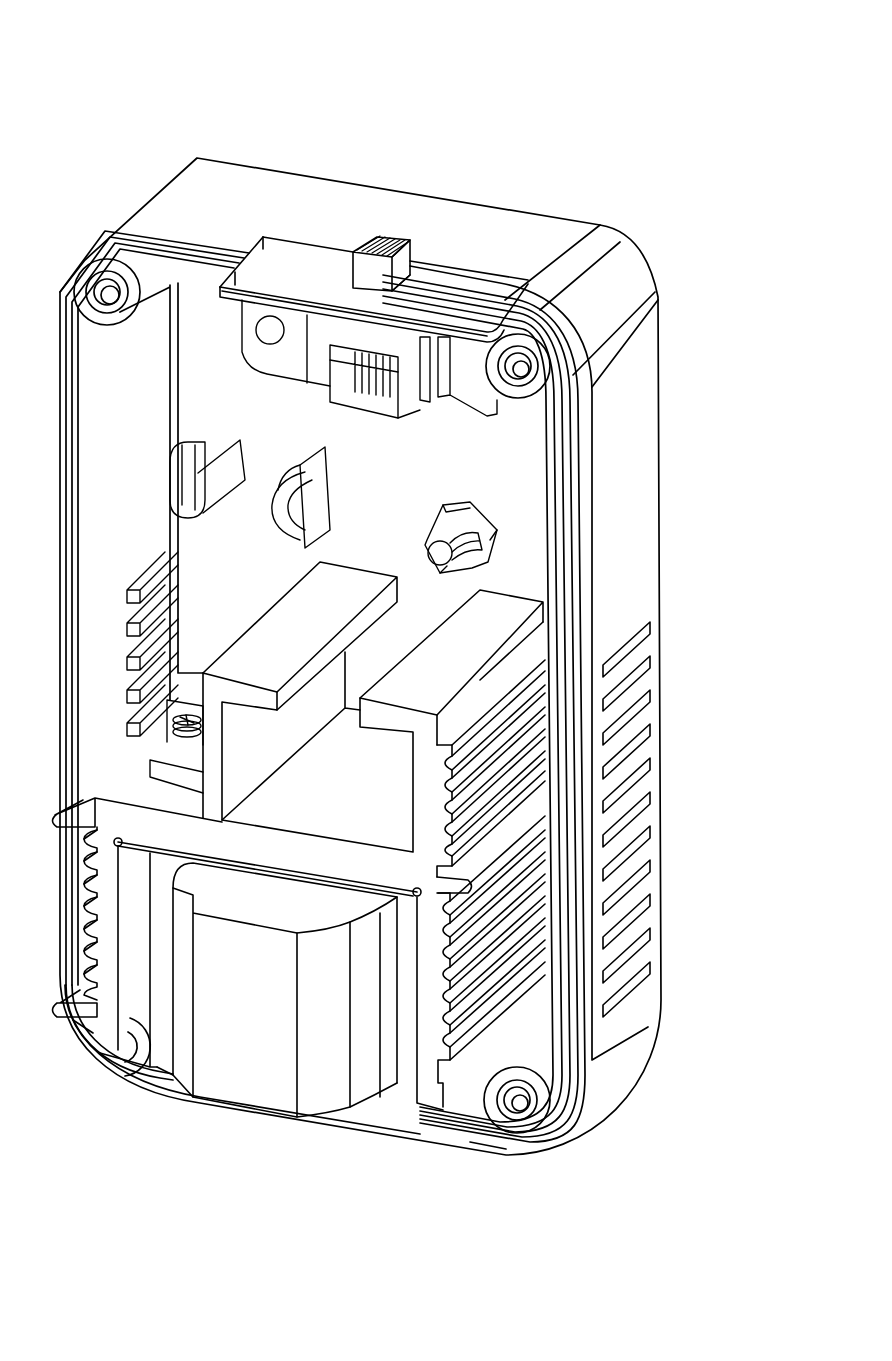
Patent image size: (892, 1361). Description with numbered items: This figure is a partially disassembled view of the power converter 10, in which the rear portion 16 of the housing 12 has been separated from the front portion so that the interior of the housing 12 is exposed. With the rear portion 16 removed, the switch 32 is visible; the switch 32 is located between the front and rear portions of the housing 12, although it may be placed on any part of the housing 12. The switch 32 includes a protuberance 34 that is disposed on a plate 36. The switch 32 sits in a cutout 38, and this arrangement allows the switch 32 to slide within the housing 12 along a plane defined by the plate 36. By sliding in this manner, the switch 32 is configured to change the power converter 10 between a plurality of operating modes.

The power converter 10 is at (513, 57).
The housing 12 is at (545, 208).
The rear portion 16 is at (627, 480).
The switch 32 is at (373, 237).
The protuberance 34 is at (403, 240).
The plate 36 is at (287, 275).
The cutout 38 is at (318, 250).